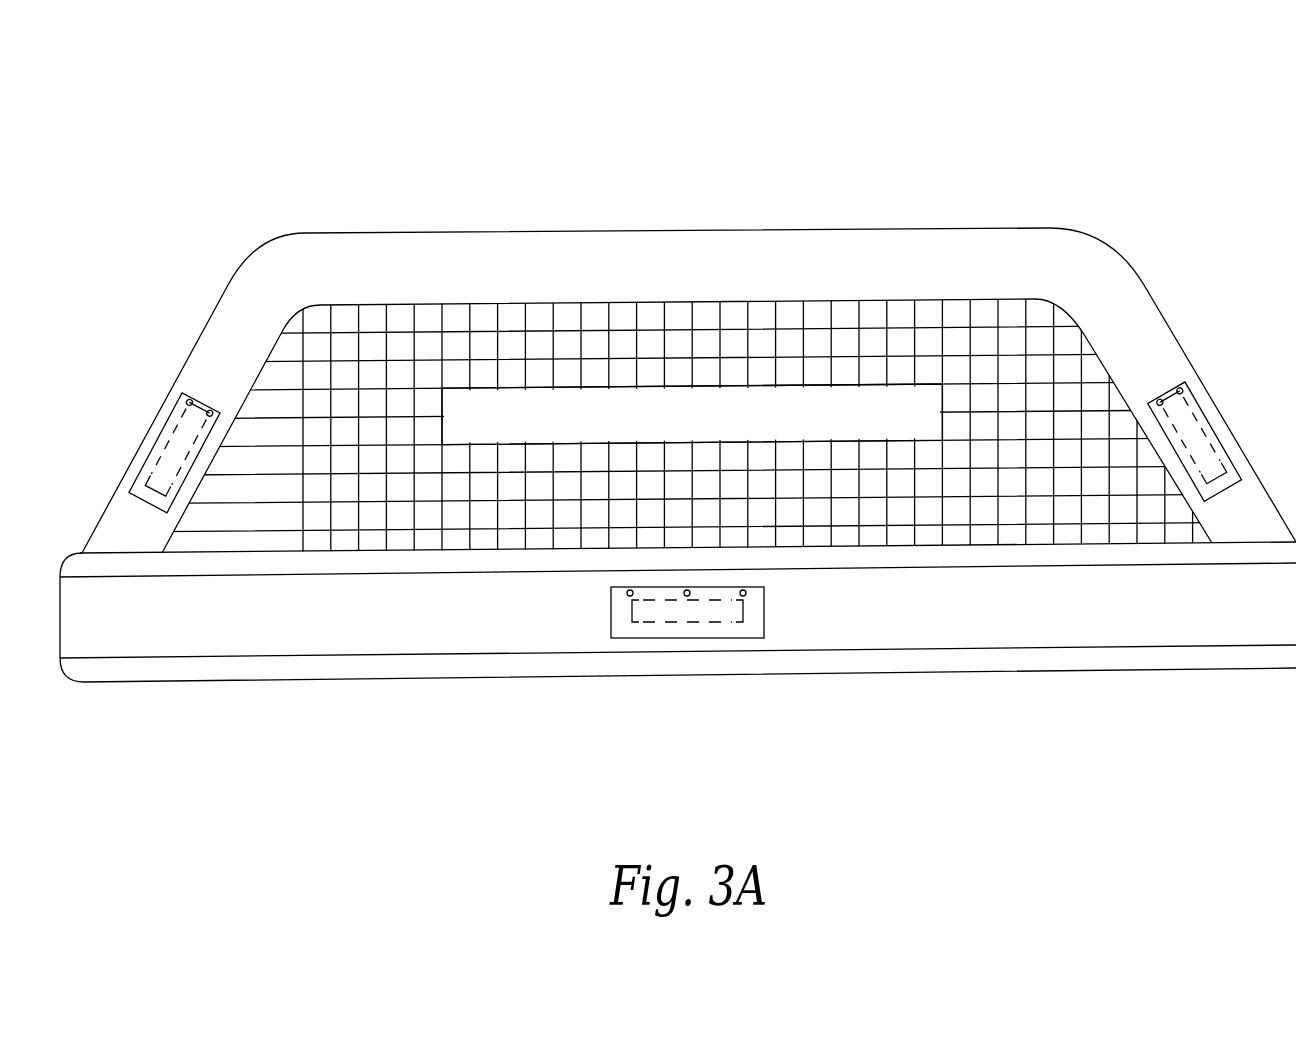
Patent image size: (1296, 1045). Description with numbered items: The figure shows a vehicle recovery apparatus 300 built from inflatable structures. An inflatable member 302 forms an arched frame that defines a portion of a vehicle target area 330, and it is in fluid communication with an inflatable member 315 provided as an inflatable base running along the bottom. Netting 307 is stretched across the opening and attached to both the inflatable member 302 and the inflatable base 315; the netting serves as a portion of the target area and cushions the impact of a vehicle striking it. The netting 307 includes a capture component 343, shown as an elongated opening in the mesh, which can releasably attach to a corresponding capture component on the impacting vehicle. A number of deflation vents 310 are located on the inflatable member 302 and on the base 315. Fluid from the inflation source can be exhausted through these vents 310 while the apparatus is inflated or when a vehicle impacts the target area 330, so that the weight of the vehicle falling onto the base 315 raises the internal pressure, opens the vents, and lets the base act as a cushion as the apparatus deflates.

The apparatus 300 is at (251, 93).
The inflatable member 302 is at (916, 228).
The netting 307 is at (512, 332).
The capture component 343 is at (698, 413).
The deflation vents 310 is at (216, 379).
The vehicle target area 330 is at (498, 575).
The inflatable base 315 is at (1095, 670).